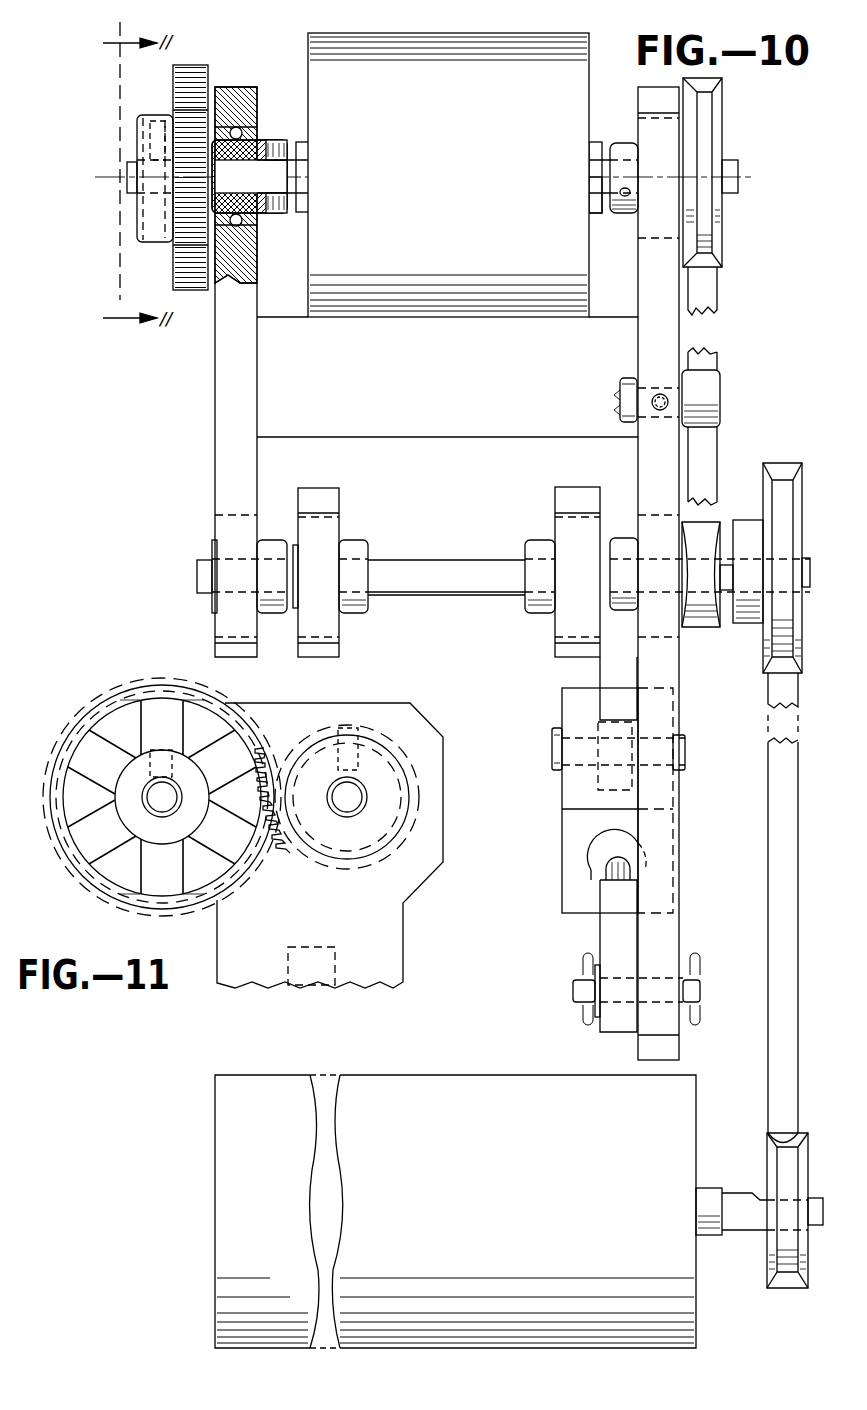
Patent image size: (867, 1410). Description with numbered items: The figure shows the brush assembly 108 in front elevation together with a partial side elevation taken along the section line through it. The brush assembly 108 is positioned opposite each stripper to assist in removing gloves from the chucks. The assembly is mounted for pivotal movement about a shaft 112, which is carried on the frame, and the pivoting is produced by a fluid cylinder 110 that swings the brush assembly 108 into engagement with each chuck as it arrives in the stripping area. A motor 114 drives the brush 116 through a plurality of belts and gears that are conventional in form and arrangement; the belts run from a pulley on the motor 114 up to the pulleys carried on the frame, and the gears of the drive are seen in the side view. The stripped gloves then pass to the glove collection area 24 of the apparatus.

The brush 116 is at (452, 124).
The brush assembly 108 is at (750, 104).
The shaft 112 is at (437, 563).
The glove collection area 24 is at (550, 750).
The fluid cylinder 110 is at (577, 788).
The motor 114 is at (445, 1220).